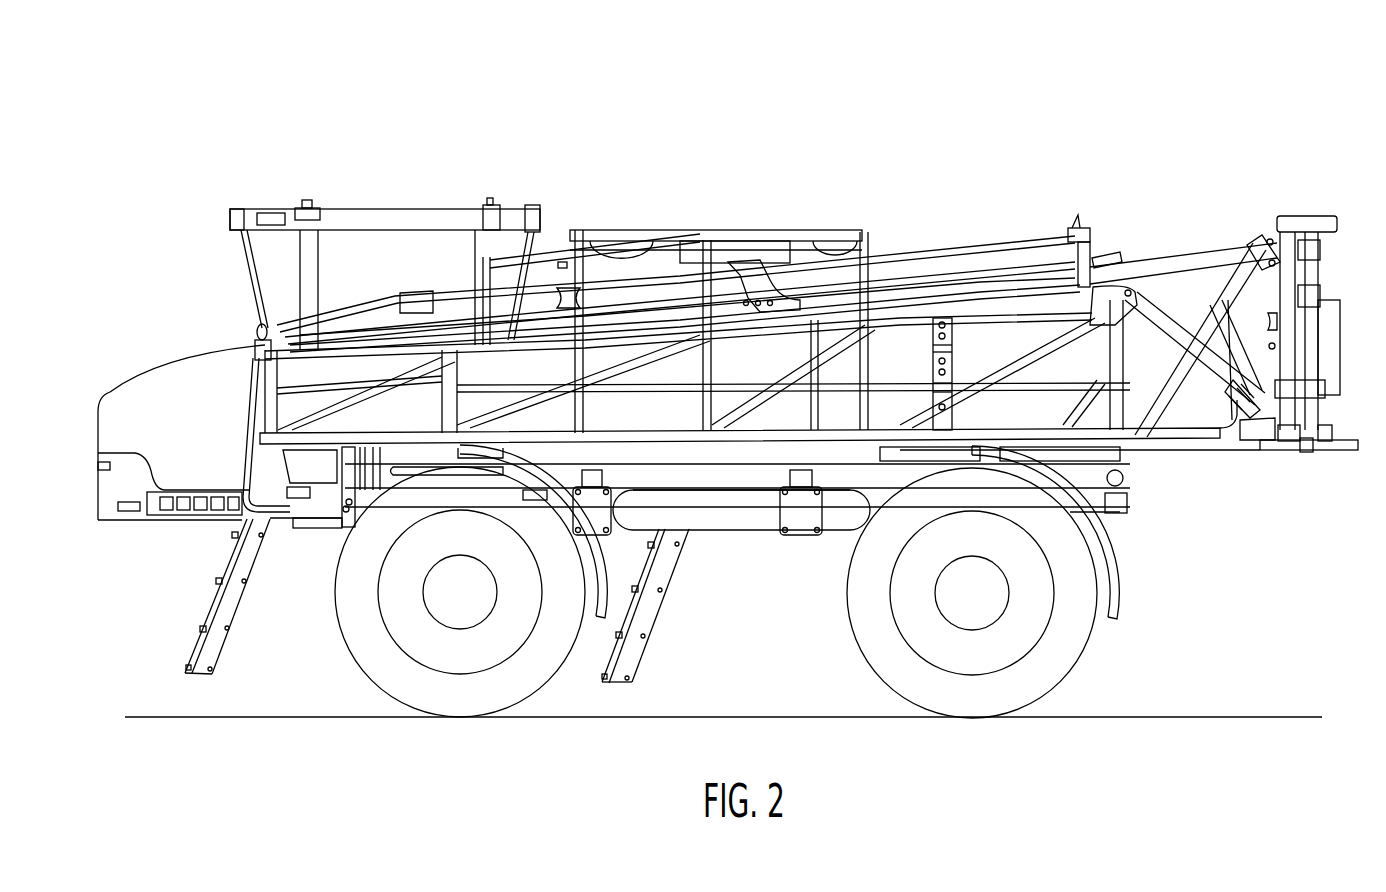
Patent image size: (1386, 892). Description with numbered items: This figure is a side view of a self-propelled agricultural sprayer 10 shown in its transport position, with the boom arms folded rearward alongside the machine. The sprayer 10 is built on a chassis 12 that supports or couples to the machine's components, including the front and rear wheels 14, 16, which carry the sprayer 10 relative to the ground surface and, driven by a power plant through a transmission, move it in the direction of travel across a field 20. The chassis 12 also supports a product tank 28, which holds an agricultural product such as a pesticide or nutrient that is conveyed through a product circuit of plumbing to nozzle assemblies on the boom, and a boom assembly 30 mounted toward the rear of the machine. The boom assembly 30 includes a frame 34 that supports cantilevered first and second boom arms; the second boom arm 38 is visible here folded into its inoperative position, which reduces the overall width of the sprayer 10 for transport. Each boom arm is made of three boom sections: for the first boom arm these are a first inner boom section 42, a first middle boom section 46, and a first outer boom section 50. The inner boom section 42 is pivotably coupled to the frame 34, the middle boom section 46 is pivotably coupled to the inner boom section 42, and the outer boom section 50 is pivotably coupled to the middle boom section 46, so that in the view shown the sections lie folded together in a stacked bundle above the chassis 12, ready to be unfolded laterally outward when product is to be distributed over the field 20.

The self-propelled agricultural sprayer 10 is at (1122, 159).
The chassis 12 is at (728, 515).
The front wheels 14 is at (538, 659).
The rear wheels 16 is at (1048, 666).
The field 20 is at (383, 208).
The product tank 28 is at (608, 267).
The boom assembly 30 is at (948, 206).
The frame 34 is at (1322, 215).
The second boom arm 38 is at (1087, 216).
The first inner boom section 42 is at (905, 262).
The first middle boom section 46 is at (905, 262).
The first outer boom section 50 is at (905, 262).